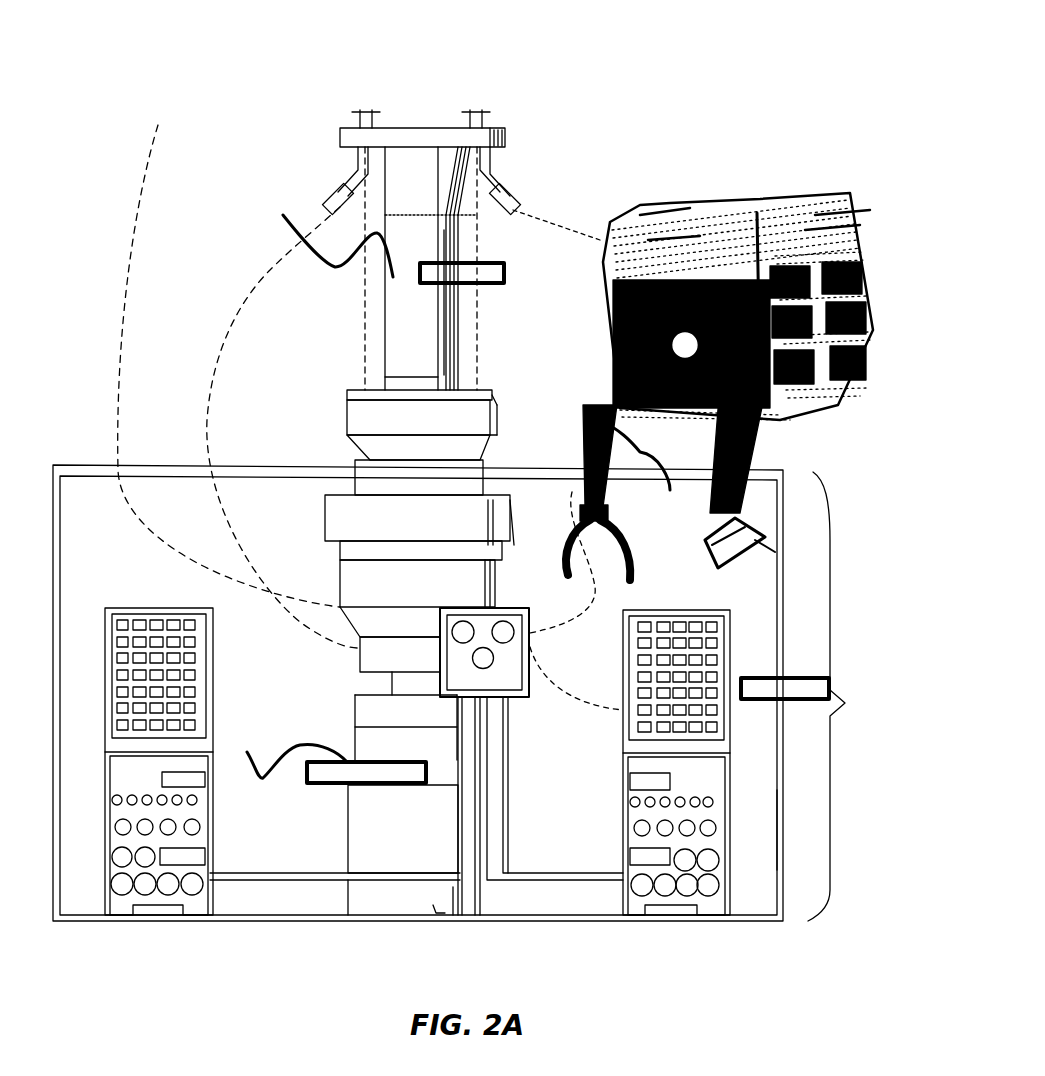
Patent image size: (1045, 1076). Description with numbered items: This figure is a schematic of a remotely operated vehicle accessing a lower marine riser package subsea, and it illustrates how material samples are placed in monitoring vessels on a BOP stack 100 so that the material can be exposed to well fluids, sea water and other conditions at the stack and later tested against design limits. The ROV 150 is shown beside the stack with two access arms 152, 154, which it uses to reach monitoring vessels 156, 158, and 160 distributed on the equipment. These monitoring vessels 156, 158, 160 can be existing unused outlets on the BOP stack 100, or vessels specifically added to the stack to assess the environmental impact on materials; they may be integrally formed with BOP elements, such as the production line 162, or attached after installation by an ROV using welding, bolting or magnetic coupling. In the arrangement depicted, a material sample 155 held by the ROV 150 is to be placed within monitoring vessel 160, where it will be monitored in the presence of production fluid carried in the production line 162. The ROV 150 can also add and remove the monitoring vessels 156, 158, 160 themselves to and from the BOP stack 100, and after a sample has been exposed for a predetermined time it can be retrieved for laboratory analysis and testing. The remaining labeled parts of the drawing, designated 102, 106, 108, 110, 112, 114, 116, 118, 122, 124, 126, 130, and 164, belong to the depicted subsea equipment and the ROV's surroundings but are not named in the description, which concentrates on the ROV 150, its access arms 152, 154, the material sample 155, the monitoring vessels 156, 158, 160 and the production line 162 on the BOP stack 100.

The BOP stack 100 is at (608, 23).
The base frame 102 is at (489, 693).
The mast assembly 106 is at (337, 583).
The left equipment cabinet 108 is at (165, 608).
The right equipment cabinet 110 is at (678, 610).
The outer range arc 112 is at (130, 250).
The inner range arc 114 is at (255, 288).
The mast column 116 is at (360, 330).
The conduit tube 118 is at (482, 332).
The top plate with nozzles 122 is at (428, 128).
The connector box 124 is at (465, 607).
The lower mast block 126 is at (343, 833).
The bottom piping 130 is at (663, 905).
The ROV 150 is at (800, 170).
The access arm 152 is at (607, 470).
The access arm 154 is at (740, 400).
The material sample 155 is at (720, 543).
The monitoring vessel 156 is at (505, 266).
The monitoring vessel 158 is at (833, 680).
The monitoring vessel 160 is at (326, 758).
The production line 162 is at (328, 236).
The frame side wall 164 is at (782, 830).